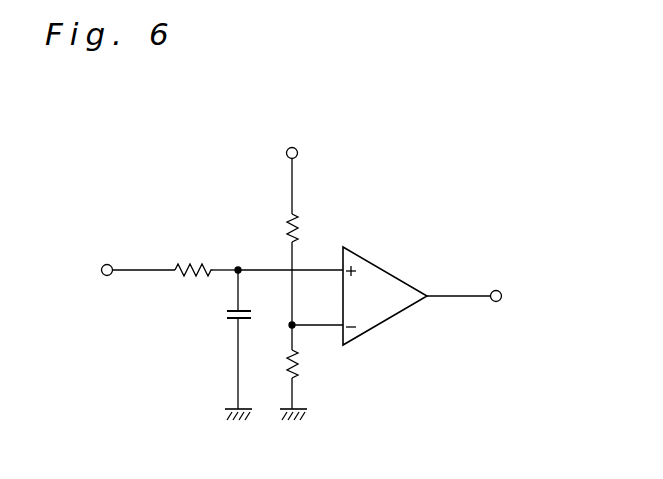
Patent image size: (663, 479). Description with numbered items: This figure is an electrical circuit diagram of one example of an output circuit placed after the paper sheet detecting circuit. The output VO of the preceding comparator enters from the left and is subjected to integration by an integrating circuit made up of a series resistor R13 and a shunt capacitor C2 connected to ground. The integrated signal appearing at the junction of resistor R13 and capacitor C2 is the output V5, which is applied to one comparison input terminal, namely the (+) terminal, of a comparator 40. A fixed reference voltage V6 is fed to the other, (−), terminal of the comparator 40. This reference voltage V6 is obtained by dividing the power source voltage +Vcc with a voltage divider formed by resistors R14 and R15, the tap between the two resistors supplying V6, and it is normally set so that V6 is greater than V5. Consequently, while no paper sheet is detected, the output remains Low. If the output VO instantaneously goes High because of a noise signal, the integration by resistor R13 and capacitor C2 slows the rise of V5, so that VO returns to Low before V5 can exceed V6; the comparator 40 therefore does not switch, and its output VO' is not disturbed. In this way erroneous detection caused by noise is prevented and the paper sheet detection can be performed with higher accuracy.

The comparator 40 is at (397, 307).
The resistor R13 is at (195, 262).
The resistor R14 is at (299, 228).
The resistor R15 is at (298, 368).
The capacitor C2 is at (226, 314).
The output V5 is at (240, 271).
The reference voltage V6 is at (294, 323).
The output VO is at (112, 271).
The power source voltage Vcc is at (302, 161).
The output VO' is at (491, 292).